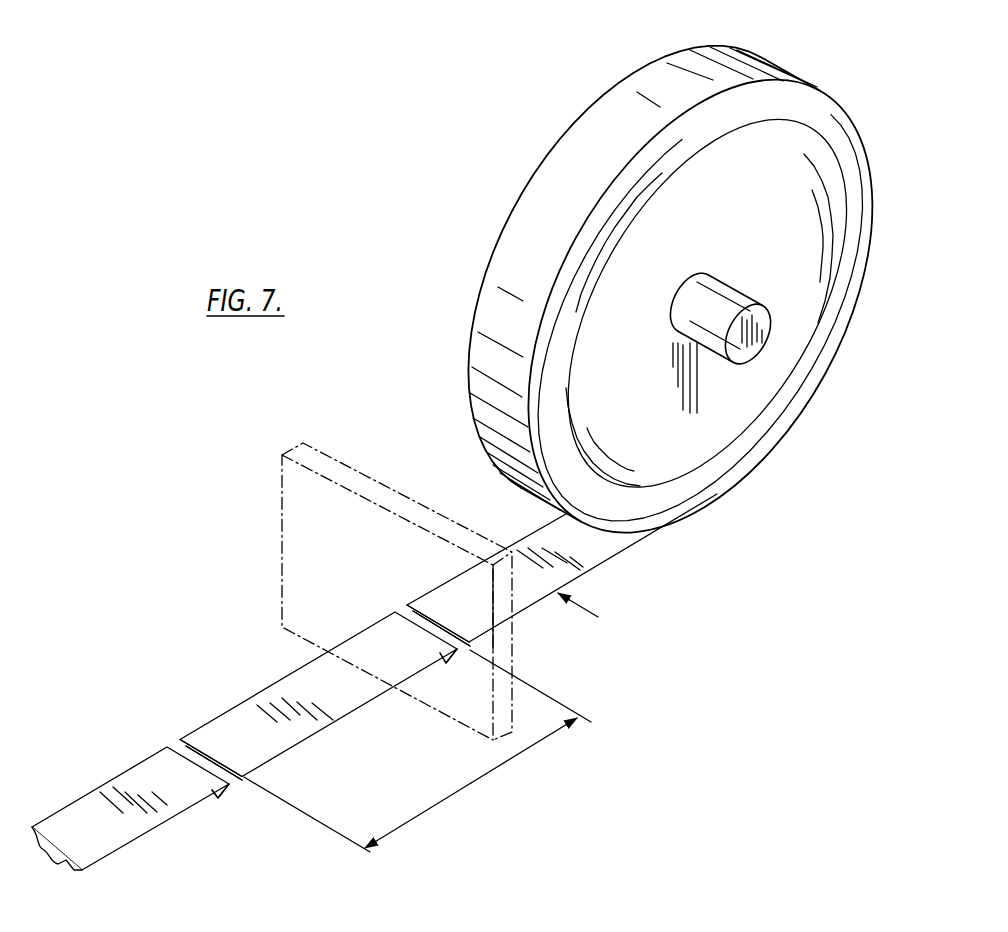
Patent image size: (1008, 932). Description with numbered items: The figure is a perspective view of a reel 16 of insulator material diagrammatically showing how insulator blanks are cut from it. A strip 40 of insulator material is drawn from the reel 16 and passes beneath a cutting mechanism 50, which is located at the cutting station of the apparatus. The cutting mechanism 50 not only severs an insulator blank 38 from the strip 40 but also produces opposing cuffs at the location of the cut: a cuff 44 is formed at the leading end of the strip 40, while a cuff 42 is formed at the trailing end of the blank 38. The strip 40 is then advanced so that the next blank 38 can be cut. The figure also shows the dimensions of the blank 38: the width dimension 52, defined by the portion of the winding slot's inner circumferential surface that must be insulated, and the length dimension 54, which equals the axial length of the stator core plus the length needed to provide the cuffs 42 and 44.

The wheel 16 is at (570, 155).
The insulator blank 38 is at (88, 802).
The strip 40 is at (590, 560).
The cuff 42 is at (222, 793).
The cuff 44 is at (247, 785).
The cutting mechanism 50 is at (490, 558).
The width dimension 52 is at (597, 617).
The length dimension 54 is at (417, 751).